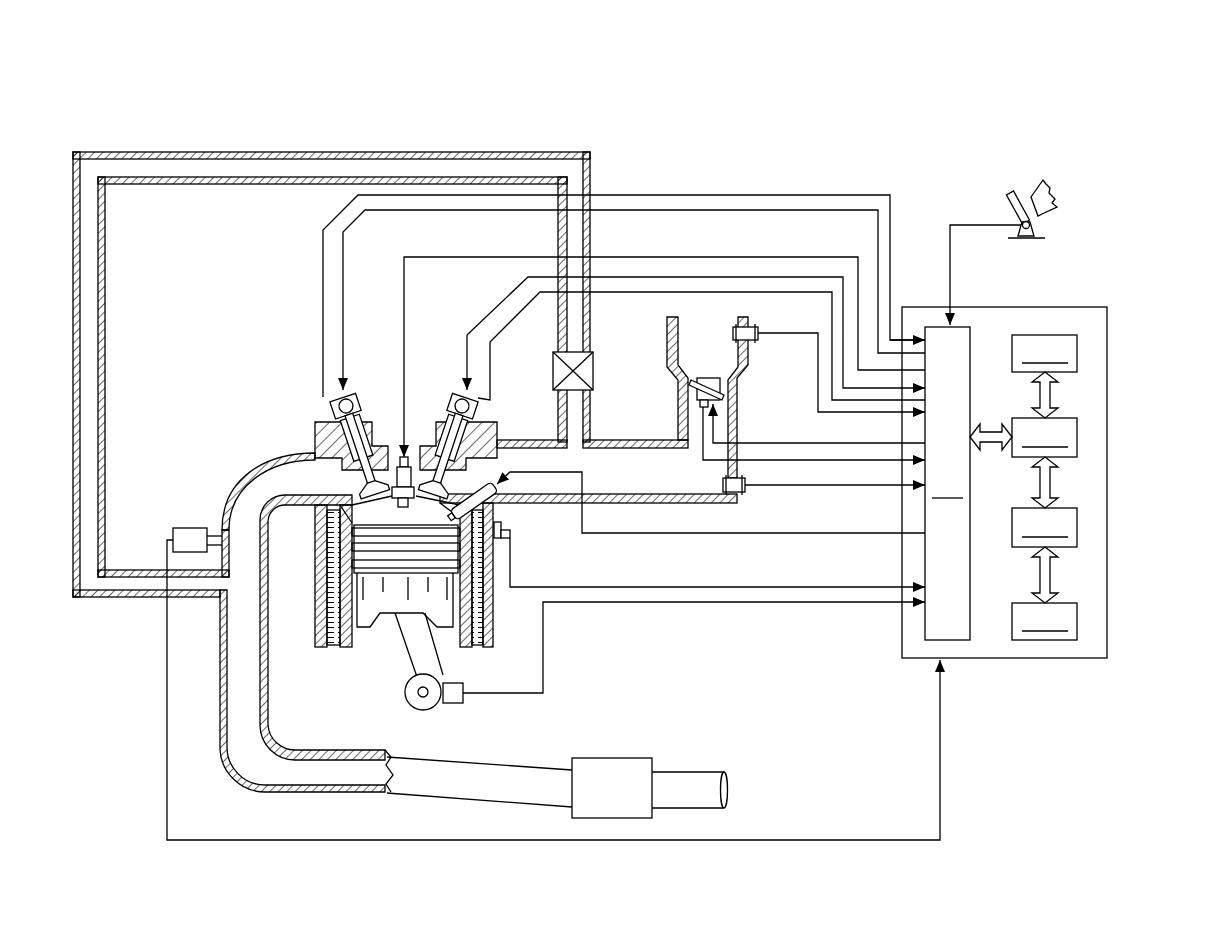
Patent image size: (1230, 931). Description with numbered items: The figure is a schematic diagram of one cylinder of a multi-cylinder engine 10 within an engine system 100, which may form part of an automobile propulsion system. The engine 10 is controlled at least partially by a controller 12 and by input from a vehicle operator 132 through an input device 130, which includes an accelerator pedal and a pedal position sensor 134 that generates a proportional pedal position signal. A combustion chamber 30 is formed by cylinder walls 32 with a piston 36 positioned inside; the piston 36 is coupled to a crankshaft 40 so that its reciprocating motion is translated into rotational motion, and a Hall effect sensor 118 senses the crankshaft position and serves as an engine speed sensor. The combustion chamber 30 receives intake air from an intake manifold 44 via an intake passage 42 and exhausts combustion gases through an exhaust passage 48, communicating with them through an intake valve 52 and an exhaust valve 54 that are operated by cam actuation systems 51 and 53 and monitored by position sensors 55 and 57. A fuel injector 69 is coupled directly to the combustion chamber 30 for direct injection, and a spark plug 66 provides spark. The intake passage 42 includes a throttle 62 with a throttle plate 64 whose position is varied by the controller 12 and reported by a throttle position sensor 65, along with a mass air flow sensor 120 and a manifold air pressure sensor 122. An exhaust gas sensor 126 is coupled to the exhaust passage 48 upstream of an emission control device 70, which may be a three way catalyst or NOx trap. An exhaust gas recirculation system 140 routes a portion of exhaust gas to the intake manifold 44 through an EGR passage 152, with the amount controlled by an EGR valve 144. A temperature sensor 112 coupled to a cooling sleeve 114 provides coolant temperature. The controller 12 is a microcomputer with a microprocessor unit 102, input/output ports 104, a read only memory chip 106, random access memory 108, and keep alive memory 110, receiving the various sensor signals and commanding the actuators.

The engine system 100 is at (1138, 126).
The exhaust gas recirculation (EGR) system 140 is at (466, 137).
The EGR passage 152 is at (330, 152).
The EGR valve 144 is at (618, 360).
The emission control device 70 is at (557, 787).
The engine 10 is at (255, 380).
The exhaust passage 48 is at (298, 489).
The intake manifold 44 is at (660, 484).
The intake passage 42 is at (719, 359).
The throttle position sensor 65 is at (697, 407).
The throttle 62 is at (715, 385).
The throttle plate 64 is at (688, 383).
The mass air flow sensor 120 is at (755, 328).
The manifold air pressure sensor 122 is at (740, 492).
The cylinder walls 32 is at (352, 647).
The cooling sleeve 114 is at (477, 603).
The combustion chamber 30 is at (380, 515).
The piston 36 is at (390, 600).
The crankshaft 40 is at (417, 710).
The Hall effect sensor 118 is at (456, 703).
The cam actuation system 53 is at (350, 382).
The position sensor 57 is at (333, 400).
The exhaust valve 54 is at (362, 478).
The cam actuation system 51 is at (460, 385).
The position sensor 55 is at (482, 402).
The spark plug 66 is at (405, 456).
The intake valve 52 is at (452, 490).
The fuel injector 69 is at (497, 513).
The temperature sensor 112 is at (506, 540).
The exhaust gas sensor 126 is at (175, 533).
The controller 12 is at (1110, 307).
The input/output ports 104 is at (975, 328).
The read only memory chip 106 is at (1078, 350).
The microprocessor unit 102 is at (1078, 440).
The random access memory 108 is at (1078, 535).
The keep alive memory 110 is at (1078, 625).
The input device 130 is at (1010, 200).
The vehicle operator 132 is at (1050, 192).
The pedal position sensor 134 is at (1040, 228).